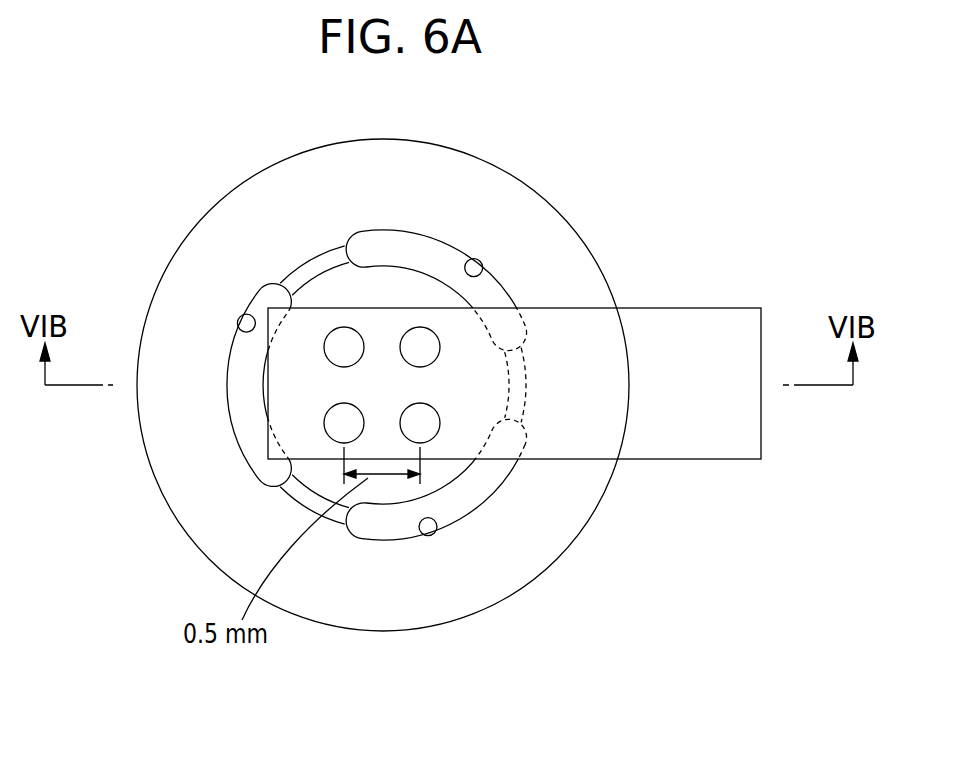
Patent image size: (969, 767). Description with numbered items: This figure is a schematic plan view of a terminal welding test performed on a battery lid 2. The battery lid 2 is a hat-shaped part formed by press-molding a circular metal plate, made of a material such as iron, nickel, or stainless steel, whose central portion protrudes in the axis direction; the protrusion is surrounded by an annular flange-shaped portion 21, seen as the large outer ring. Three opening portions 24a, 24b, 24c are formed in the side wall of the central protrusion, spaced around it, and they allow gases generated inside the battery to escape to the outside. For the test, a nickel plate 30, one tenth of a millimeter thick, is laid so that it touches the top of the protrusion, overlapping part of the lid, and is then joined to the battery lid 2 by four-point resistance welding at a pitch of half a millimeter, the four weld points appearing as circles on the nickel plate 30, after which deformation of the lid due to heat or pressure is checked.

The battery lid 2 is at (505, 112).
The annular flange-shaped portion 21 is at (513, 545).
The opening portion 24a is at (240, 336).
The opening portion 24b is at (413, 532).
The opening portion 24c is at (483, 268).
The nickel plate 30 is at (707, 306).